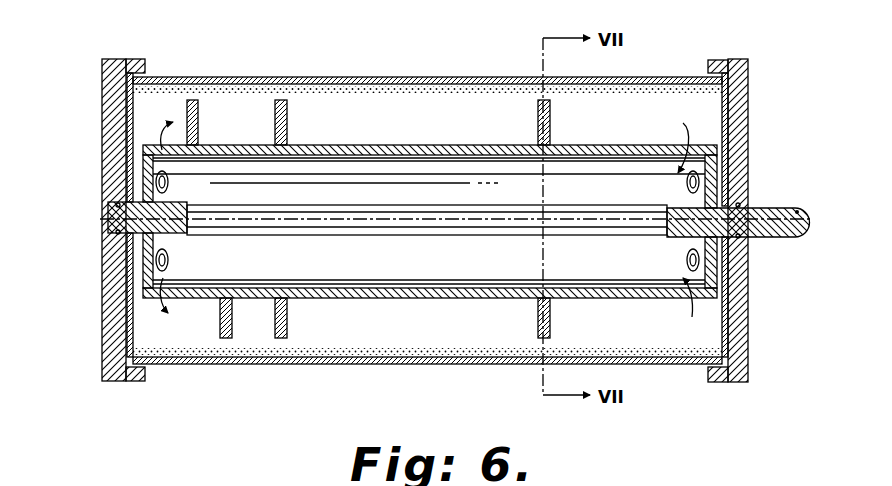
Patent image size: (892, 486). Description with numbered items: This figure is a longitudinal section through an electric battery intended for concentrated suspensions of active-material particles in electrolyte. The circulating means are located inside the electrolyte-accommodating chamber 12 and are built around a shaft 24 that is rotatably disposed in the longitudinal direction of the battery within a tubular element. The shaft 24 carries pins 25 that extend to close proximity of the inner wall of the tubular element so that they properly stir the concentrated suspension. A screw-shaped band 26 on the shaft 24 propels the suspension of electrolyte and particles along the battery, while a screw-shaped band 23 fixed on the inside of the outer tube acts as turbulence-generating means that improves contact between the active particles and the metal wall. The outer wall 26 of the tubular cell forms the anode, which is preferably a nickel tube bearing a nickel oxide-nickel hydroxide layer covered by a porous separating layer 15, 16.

The electrolyte-accommodating chamber 12 is at (400, 117).
The porous separating layer 15 is at (262, 357).
The porous separating layer 16 is at (427, 351).
The screw-shaped band 23 is at (202, 138).
The shaft 24 is at (422, 297).
The pins 25 is at (290, 115).
The screw-shaped band 26 is at (273, 77).